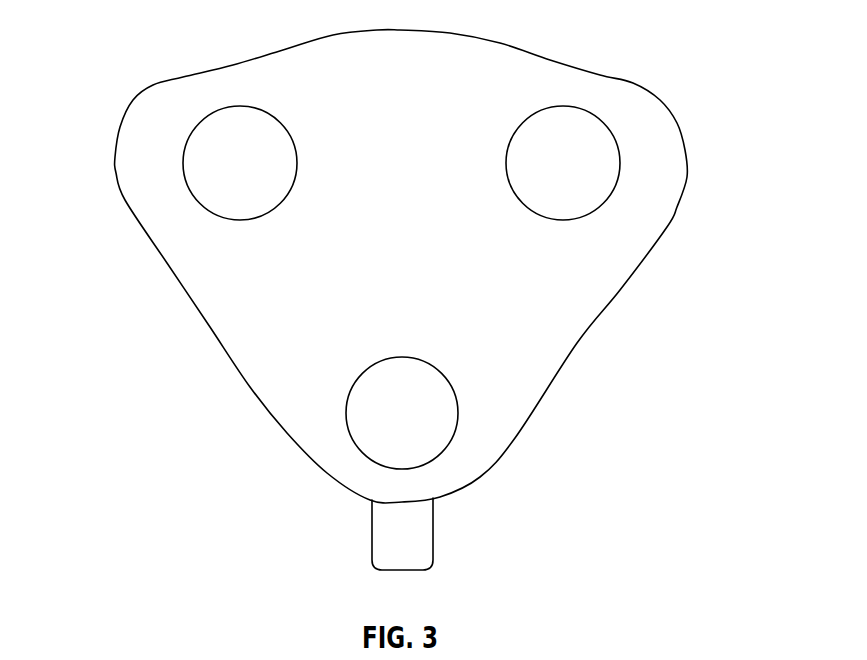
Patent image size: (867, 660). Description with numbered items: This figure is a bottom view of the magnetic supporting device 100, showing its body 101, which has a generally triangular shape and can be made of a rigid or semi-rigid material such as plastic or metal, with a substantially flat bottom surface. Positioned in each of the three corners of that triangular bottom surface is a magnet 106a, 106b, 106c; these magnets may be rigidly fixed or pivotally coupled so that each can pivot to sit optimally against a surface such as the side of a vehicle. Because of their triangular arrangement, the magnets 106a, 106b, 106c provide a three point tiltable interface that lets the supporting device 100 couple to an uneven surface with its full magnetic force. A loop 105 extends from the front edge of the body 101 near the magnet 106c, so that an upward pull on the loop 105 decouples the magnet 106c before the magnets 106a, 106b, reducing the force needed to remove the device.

The magnetic supporting device 100 is at (113, 44).
The body 101 is at (562, 340).
The loop 105 is at (433, 528).
The magnet 106a is at (184, 163).
The magnet 106b is at (620, 163).
The magnet 106c is at (347, 412).